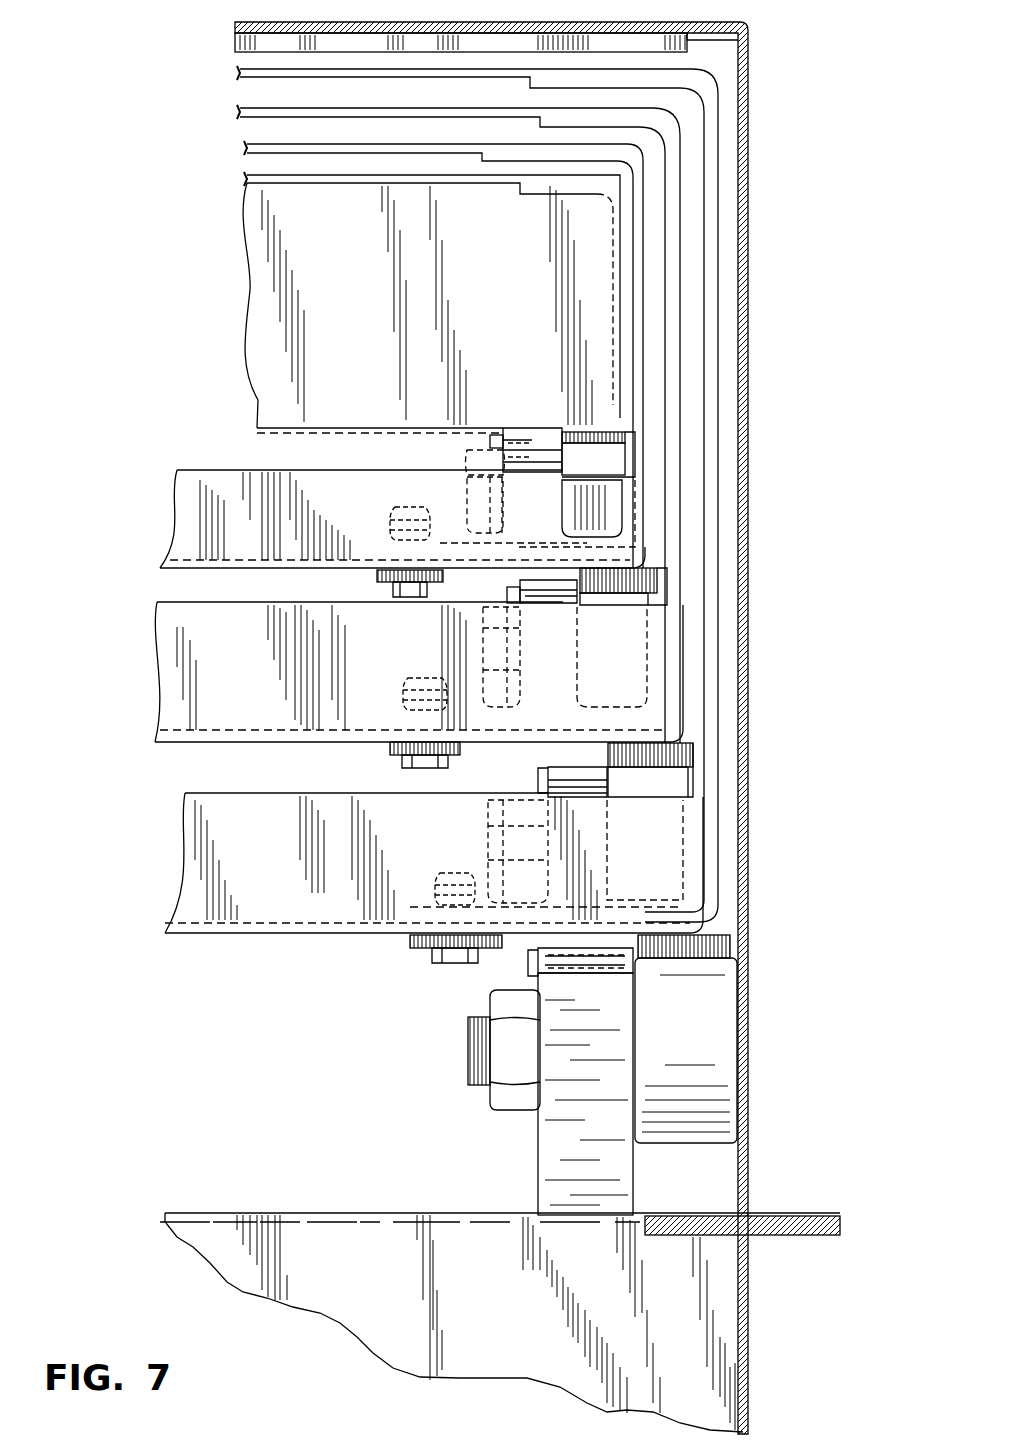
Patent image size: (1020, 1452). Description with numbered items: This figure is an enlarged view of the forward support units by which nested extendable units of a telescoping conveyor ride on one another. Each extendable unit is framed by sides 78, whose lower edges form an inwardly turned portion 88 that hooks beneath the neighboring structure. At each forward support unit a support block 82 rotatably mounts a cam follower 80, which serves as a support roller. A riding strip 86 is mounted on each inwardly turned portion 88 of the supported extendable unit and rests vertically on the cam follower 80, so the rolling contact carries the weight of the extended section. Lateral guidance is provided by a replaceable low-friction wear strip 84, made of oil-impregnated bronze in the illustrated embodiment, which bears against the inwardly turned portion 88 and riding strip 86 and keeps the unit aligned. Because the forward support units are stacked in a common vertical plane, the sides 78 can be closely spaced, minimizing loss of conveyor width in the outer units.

The side 78 is at (672, 295).
The cam follower 80 is at (640, 516).
The support block 82 is at (483, 532).
The wear strip 84 is at (543, 428).
The riding strip 86 is at (625, 427).
The inwardly turned portion 88 is at (645, 405).